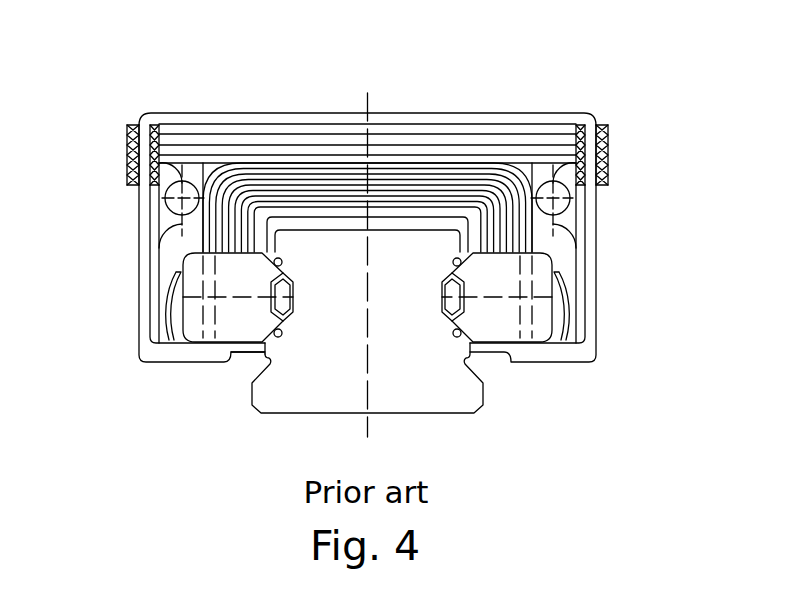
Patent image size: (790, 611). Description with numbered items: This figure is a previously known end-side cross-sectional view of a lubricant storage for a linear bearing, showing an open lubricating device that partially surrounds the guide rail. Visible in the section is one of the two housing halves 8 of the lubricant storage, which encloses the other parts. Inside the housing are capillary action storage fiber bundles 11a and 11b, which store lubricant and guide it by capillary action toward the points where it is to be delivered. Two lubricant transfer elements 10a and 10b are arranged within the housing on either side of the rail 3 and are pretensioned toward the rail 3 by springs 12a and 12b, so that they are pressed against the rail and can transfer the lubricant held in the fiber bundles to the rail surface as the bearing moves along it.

The capillary action storage fiber bundle 11a is at (295, 150).
The capillary action storage fiber bundle 11b is at (423, 180).
The lubricant transfer element 10a is at (233, 278).
The lubricant transfer element 10b is at (532, 258).
The spring 12a is at (177, 305).
The spring 12b is at (562, 308).
The housing half 8 is at (246, 345).
The rail 3 is at (465, 395).